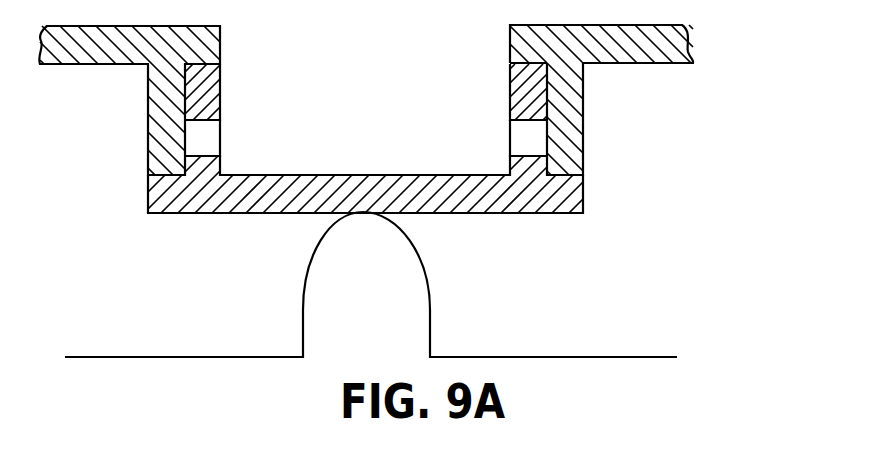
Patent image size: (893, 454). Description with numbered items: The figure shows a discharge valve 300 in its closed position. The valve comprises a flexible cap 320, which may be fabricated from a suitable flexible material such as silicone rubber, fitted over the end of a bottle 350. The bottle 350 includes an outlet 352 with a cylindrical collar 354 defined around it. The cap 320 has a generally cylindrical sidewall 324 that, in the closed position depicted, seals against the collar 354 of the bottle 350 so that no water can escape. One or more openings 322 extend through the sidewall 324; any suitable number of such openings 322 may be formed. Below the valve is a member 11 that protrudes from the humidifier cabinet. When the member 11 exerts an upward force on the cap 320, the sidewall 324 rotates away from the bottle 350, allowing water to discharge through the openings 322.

The member 11 is at (377, 313).
The discharge valve 300 is at (697, 194).
The flexible cap 320 is at (548, 202).
The opening 322 is at (534, 138).
The sidewall 324 is at (529, 80).
The bottle 350 is at (690, 60).
The outlet 352 is at (392, 57).
The cylindrical collar 354 is at (573, 98).